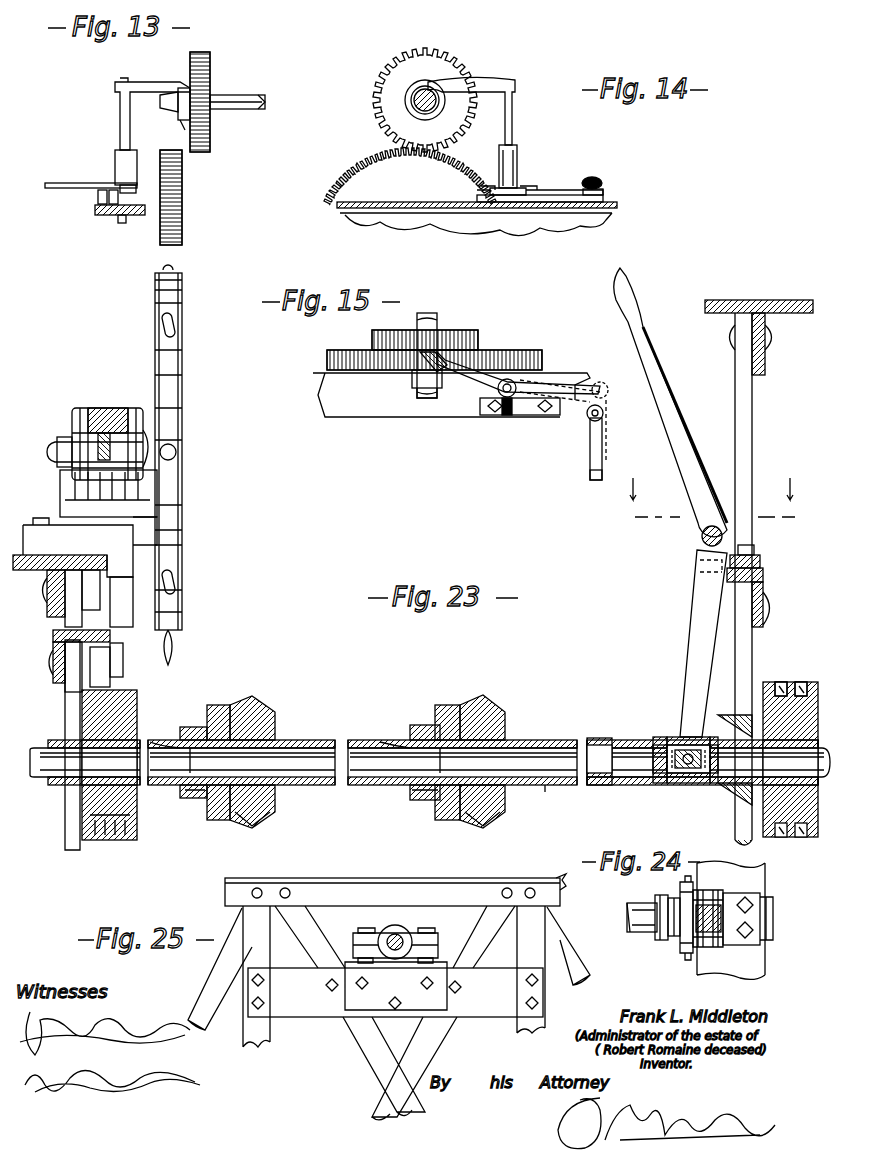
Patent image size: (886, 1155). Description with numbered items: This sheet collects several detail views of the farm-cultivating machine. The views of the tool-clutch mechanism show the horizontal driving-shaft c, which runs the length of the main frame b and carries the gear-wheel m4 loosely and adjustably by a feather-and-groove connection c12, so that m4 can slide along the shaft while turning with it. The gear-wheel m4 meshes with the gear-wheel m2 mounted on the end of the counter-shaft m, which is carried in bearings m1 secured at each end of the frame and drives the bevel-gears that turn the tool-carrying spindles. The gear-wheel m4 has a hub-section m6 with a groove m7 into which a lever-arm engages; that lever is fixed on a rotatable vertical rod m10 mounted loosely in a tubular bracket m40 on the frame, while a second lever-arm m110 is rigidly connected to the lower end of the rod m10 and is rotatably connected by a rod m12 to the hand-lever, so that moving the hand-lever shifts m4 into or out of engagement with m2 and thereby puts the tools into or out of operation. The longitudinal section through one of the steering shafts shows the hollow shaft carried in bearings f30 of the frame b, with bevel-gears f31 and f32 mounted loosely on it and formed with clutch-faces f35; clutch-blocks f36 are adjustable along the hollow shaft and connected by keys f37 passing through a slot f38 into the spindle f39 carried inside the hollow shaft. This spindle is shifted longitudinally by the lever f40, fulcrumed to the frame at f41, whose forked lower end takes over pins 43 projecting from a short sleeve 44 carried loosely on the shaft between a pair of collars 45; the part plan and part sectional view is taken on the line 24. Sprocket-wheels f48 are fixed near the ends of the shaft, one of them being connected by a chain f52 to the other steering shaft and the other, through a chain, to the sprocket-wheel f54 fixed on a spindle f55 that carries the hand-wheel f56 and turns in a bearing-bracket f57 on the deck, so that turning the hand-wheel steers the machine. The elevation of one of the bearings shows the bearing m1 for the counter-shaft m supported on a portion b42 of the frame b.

In FIG. 13, the gear-wheel m4 is at (210, 62).
In FIG. 14, the gear-wheel m4 is at (378, 104).
In FIG. 15, the gear-wheel m4 is at (470, 330).
In FIG. 13, the driving-shaft c is at (240, 109).
In FIG. 14, the driving-shaft c is at (418, 92).
In FIG. 13, the feather-and-groove connection c12 is at (228, 95).
In FIG. 14, the feather-and-groove connection c12 is at (440, 112).
In FIG. 15, the feather-and-groove connection c12 is at (442, 313).
In FIG. 13, the hub-section m6 is at (178, 112).
In FIG. 14, the hub-section m6 is at (414, 106).
In FIG. 15, the hub-section m6 is at (412, 378).
In FIG. 13, the groove m7 is at (185, 128).
In FIG. 15, the groove m7 is at (428, 370).
In FIG. 13, the vertical rod m10 is at (120, 110).
In FIG. 14, the vertical rod m10 is at (512, 110).
In FIG. 15, the vertical rod m10 is at (505, 398).
In FIG. 13, the lever-arm m110 is at (125, 163).
In FIG. 14, the lever-arm m110 is at (568, 194).
In FIG. 15, the lever-arm m110 is at (585, 412).
In FIG. 13, the rod m12 is at (75, 188).
In FIG. 14, the rod m12 is at (604, 182).
In FIG. 15, the rod m12 is at (595, 470).
In FIG. 14, the tubular bracket m40 is at (518, 165).
In FIG. 15, the tubular bracket m40 is at (510, 415).
In FIG. 13, the gear-wheel m2 is at (160, 228).
In FIG. 14, the gear-wheel m2 is at (410, 176).
In FIG. 15, the gear-wheel m2 is at (522, 350).
In FIG. 13, the main frame b is at (95, 210).
In FIG. 14, the main frame b is at (608, 214).
In FIG. 15, the main frame b is at (451, 395).
In FIG. 23, the main frame b is at (65, 698).
In FIG. 24, the main frame b is at (731, 920).
In FIG. 25, the main frame b is at (389, 1013).
In FIG. 23, the hand-wheel f56 is at (155, 352).
In FIG. 23, the sprocket-wheel f54 is at (92, 440).
In FIG. 23, the spindle f55 is at (52, 462).
In FIG. 23, the bearing-bracket f57 is at (148, 488).
In FIG. 23, the sprocket-wheel f48 is at (137, 836).
In FIG. 23, the bearing f30 is at (58, 740).
In FIG. 23, the slot f38 is at (168, 740).
In FIG. 23, the clutch-block f36 is at (216, 705).
In FIG. 23, the bevel-gear f31 is at (262, 706).
In FIG. 23, the bevel-gear f32 is at (490, 720).
In FIG. 23, the clutch-face f35 is at (245, 824).
In FIG. 23, the key f37 is at (195, 798).
In FIG. 23, the spindle f39 is at (552, 786).
In FIG. 24, the spindle f39 is at (645, 932).
In FIG. 23, the lever f40 is at (663, 384).
In FIG. 24, the lever f40 is at (678, 950).
In FIG. 23, the fulcrum f41 is at (700, 540).
In FIG. 24, the fulcrum f41 is at (758, 930).
In FIG. 23, the section line 24 is at (712, 502).
In FIG. 23, the short sleeve 44 is at (674, 740).
In FIG. 23, the collar 45 is at (714, 737).
In FIG. 23, the chain f52 is at (800, 680).
In FIG. 24, the pin 43 is at (688, 956).
In FIG. 25, the beam b42 is at (348, 878).
In FIG. 25, the counter-shaft m is at (413, 940).
In FIG. 25, the bearing m1 is at (382, 932).